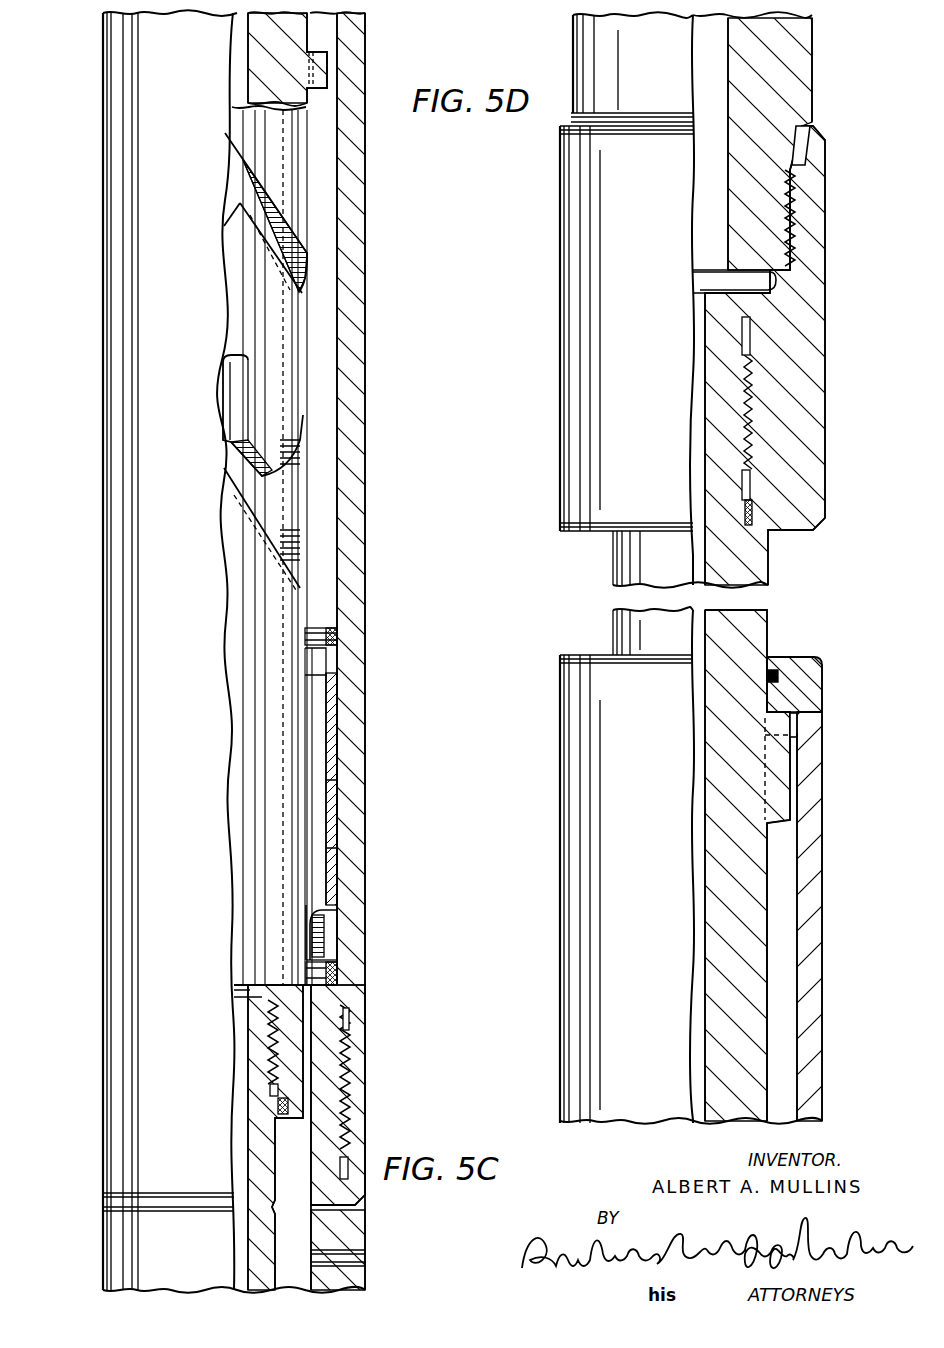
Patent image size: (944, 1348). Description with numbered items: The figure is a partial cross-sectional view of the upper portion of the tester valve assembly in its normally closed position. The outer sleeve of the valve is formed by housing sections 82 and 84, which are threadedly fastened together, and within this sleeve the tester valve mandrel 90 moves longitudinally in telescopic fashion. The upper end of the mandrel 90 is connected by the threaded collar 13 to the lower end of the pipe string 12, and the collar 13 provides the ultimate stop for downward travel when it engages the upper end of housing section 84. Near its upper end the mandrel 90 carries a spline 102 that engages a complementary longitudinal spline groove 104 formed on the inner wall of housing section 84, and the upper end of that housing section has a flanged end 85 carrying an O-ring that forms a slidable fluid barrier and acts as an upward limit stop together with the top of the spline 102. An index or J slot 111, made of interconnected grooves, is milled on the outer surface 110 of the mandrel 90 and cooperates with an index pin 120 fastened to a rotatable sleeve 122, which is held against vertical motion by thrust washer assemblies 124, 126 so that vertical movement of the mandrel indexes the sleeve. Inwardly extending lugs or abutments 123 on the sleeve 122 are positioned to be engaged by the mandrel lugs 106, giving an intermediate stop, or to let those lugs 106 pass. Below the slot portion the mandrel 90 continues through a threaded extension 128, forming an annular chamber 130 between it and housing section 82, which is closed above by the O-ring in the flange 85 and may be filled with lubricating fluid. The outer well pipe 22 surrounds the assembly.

In FIG. 5C, the well pipe / tubing string 22 is at (90, 883).
In FIG. 5D, the well pipe / tubing string 22 is at (550, 887).
In FIG. 5D, the pipe string 12 is at (800, 85).
In FIG. 5D, the threaded collar 13 is at (808, 346).
In FIG. 5C, the housing section 82 is at (330, 1082).
In FIG. 5C, the housing section 84 is at (356, 725).
In FIG. 5D, the housing section 84 is at (812, 794).
In FIG. 5D, the flanged end 85 is at (796, 672).
In FIG. 5D, the tester valve mandrel 90 is at (780, 624).
In FIG. 5D, the spline 102 is at (782, 724).
In FIG. 5D, the spline groove 104 is at (788, 906).
In FIG. 5C, the lugs 106 is at (322, 70).
In FIG. 5C, the outer surface 110 is at (312, 372).
In FIG. 5C, the index slot 111 is at (293, 242).
In FIG. 5C, the index pin 120 is at (315, 913).
In FIG. 5C, the rotatable sleeve 122 is at (334, 808).
In FIG. 5C, the lugs or abutments 123 is at (320, 656).
In FIG. 5C, the thrust washer assembly 124 is at (337, 632).
In FIG. 5C, the thrust washer assembly 126 is at (337, 976).
In FIG. 5C, the threaded extension 128 is at (268, 1240).
In FIG. 5C, the annular chamber 130 is at (300, 1279).